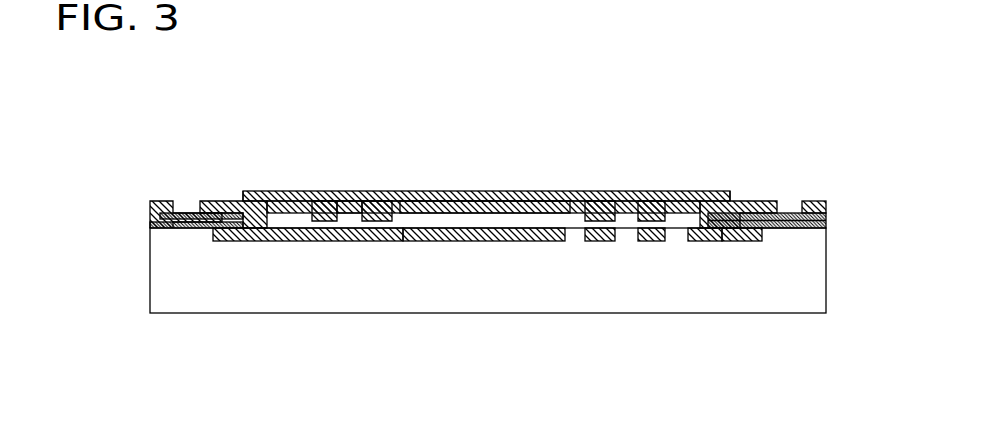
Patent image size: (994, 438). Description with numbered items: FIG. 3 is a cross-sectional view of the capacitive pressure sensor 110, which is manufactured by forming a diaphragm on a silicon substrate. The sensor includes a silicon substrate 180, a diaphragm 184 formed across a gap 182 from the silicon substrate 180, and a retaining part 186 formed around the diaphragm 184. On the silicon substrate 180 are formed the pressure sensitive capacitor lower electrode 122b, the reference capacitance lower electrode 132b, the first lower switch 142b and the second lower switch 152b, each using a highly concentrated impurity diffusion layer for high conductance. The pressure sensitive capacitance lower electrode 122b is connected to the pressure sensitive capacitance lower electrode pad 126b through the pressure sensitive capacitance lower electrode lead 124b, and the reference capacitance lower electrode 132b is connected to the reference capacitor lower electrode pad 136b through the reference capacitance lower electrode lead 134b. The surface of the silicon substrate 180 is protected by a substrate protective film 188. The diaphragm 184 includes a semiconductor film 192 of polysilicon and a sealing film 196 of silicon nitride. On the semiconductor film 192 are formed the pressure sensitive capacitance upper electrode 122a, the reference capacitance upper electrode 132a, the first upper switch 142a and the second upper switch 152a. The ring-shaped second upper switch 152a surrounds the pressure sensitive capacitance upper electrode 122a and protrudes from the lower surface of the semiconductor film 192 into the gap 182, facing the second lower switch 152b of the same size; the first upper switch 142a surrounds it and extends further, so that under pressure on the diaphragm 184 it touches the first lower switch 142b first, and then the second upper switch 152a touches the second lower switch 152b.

The capacitive pressure sensor 110 is at (128, 210).
The silicon substrate 180 is at (826, 265).
The substrate protective film 188 is at (826, 224).
The sealing film 196 is at (210, 213).
The semiconductor film 192 is at (272, 205).
The diaphragm 184 is at (460, 190).
The gap 182 is at (495, 212).
The retaining part 186 is at (241, 190).
The pressure sensitive capacitance upper electrode 122a is at (548, 205).
The reference capacitance upper electrode 132a is at (318, 205).
The first upper switch 142a is at (350, 208).
The second upper switch 152a is at (398, 208).
The pressure sensitive capacitance lower electrode pad 126b is at (183, 212).
The reference capacitor lower electrode pad 136b is at (797, 200).
The pressure sensitive capacitance lower electrode lead 124b is at (292, 242).
The pressure sensitive capacitor lower electrode 122b is at (490, 242).
The second lower switch 152b is at (600, 242).
The first lower switch 142b is at (650, 242).
The reference capacitance lower electrode 132b is at (700, 242).
The reference capacitance lower electrode lead 134b is at (745, 242).